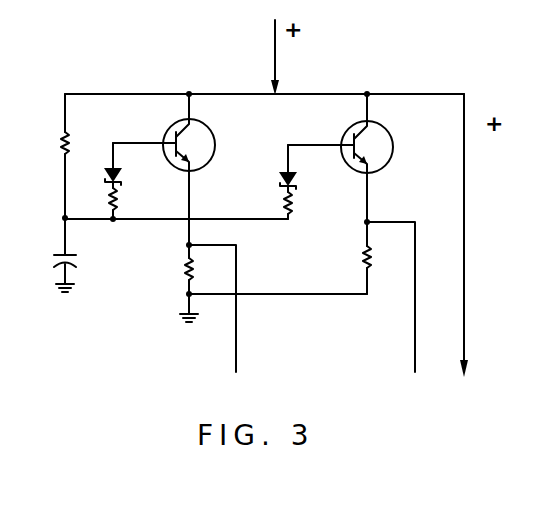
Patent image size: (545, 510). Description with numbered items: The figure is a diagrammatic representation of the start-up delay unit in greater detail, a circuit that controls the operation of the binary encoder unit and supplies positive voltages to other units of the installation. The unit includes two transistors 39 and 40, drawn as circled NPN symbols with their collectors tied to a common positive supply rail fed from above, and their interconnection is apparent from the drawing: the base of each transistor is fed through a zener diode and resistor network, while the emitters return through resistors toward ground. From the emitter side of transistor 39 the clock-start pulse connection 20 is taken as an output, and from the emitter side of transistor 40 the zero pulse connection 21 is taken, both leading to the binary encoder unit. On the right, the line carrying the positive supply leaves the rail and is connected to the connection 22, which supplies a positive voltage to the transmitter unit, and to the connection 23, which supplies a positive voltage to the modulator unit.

The transistor 39 is at (212, 130).
The transistor 40 is at (392, 137).
The clock-start pulse connection 20 is at (236, 340).
The zero pulse connection 21 is at (415, 322).
The connection 22 is at (464, 270).
The connection 23 is at (464, 302).